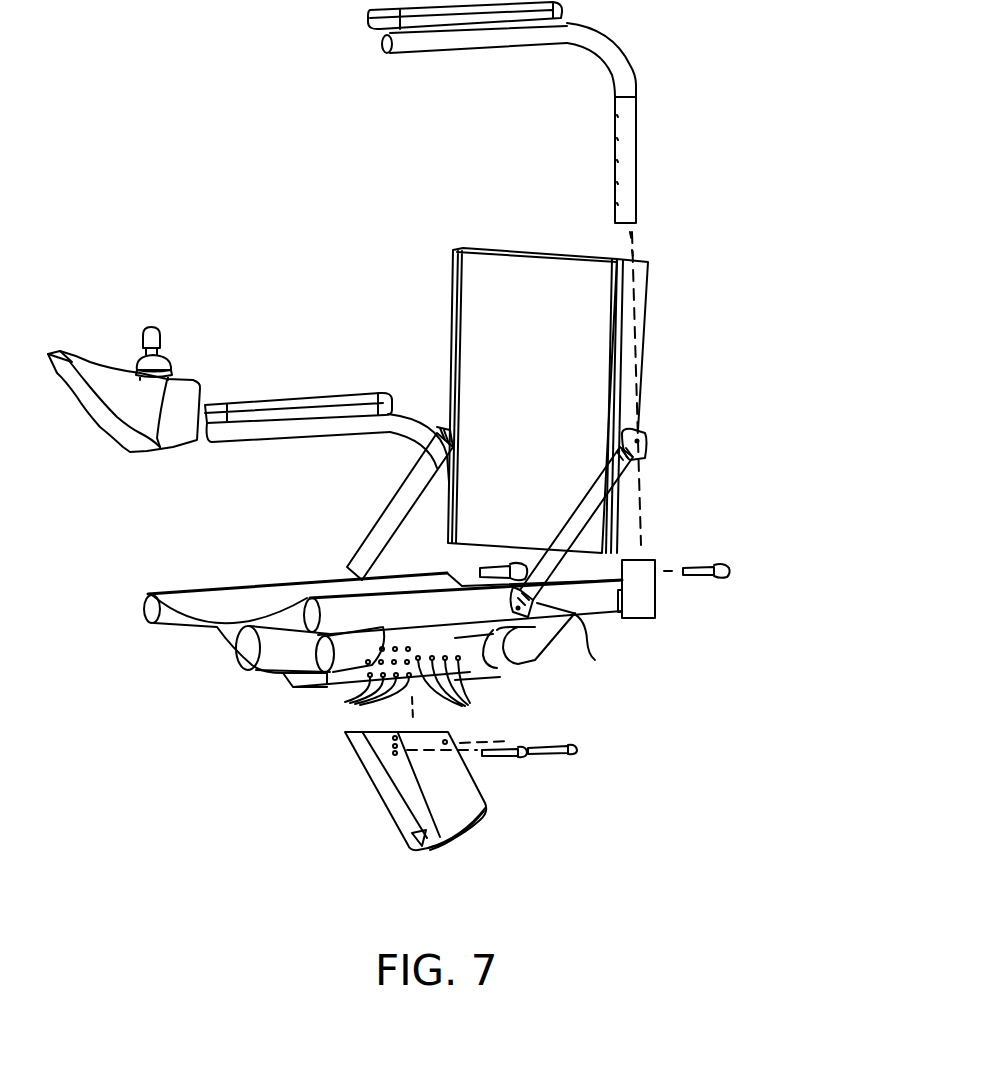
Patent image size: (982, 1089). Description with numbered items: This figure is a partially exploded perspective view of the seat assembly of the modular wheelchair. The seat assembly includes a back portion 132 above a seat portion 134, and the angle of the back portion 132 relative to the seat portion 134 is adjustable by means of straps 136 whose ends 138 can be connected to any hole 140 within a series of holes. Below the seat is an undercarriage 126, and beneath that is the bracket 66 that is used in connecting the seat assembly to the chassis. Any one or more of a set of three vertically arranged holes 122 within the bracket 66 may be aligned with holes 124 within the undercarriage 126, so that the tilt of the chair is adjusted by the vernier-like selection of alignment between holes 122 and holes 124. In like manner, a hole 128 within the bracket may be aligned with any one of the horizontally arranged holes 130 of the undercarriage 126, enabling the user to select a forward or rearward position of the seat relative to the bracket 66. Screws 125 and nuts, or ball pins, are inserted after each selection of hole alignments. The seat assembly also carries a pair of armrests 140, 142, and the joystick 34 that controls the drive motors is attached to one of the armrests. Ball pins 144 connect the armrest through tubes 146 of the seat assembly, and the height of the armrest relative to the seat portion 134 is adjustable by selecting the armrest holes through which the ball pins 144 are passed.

The armrest 142 is at (477, 42).
The back portion 132 is at (462, 312).
The joystick 34 is at (158, 344).
The armrest 140 is at (312, 400).
The straps 136 is at (390, 516).
The ball pins 144 is at (495, 565).
The seat portion 134 is at (255, 592).
The holes 124 is at (345, 703).
The horizontally arranged holes 130 is at (462, 706).
The undercarriage 126 is at (497, 680).
The ends 138 is at (587, 640).
The tubes 146 is at (648, 618).
The bracket 66 is at (385, 797).
The vertically arranged holes 122 is at (393, 753).
The hole 128 is at (447, 745).
The screws 125 is at (513, 745).